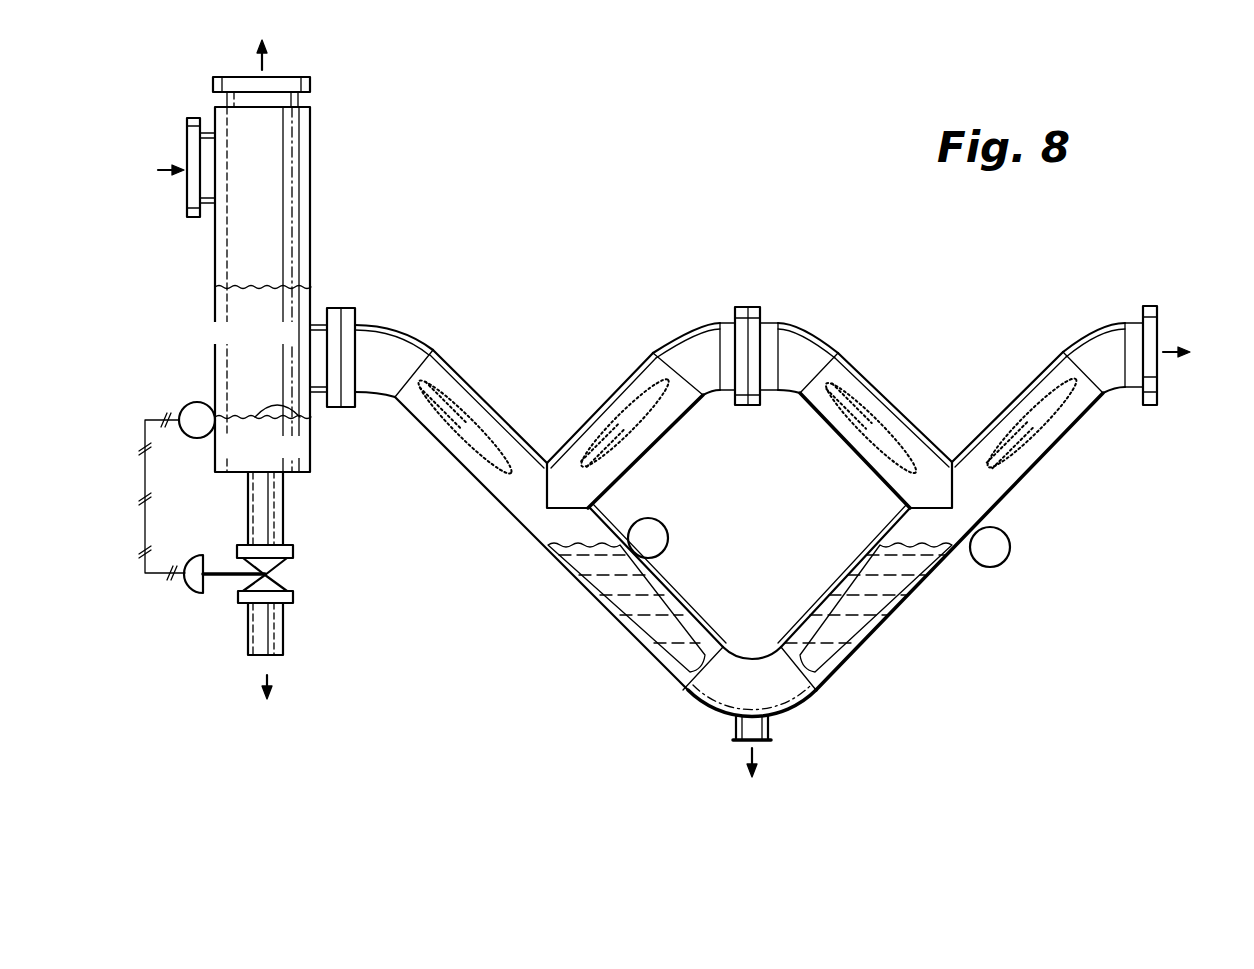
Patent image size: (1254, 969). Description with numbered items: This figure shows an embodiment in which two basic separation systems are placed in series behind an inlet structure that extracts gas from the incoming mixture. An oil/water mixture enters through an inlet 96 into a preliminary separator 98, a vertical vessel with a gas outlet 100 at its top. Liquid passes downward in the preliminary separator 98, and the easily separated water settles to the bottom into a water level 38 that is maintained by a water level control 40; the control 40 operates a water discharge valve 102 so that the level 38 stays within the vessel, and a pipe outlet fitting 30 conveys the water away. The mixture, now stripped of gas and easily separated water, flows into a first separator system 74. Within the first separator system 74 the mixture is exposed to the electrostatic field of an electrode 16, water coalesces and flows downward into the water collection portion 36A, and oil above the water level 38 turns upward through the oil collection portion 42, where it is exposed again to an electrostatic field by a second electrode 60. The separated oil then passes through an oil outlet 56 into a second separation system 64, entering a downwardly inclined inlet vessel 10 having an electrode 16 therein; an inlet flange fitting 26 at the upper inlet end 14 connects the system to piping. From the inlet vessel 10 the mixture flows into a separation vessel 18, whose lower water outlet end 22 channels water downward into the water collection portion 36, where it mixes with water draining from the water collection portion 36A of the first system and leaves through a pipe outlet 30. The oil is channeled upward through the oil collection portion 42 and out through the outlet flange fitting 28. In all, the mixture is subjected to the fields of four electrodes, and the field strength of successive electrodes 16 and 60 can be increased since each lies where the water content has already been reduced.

The inlet vessel 10 is at (478, 478).
The upper inlet end 14 is at (418, 362).
The electrode 16 is at (458, 410).
The separation vessel 18 is at (1000, 507).
The lower water outlet end 22 is at (697, 703).
The inlet flange fitting 26 is at (345, 310).
The outlet flange fitting 28 is at (1150, 308).
The pipe outlet fitting 30 is at (772, 737).
The water collection portion 36 is at (895, 620).
The water collection portion 36A is at (637, 643).
The water level 38 is at (280, 407).
The water level control 40 is at (183, 406).
The oil collection portion 42 is at (613, 393).
The oil outlet 56 is at (740, 320).
The second electrode 60 is at (643, 397).
The second separation system 64 is at (951, 379).
The first separator system 74 is at (537, 389).
The inlet 96 is at (188, 220).
The preliminary separator 98 is at (313, 212).
The gas outlet 100 is at (313, 82).
The water discharge valve 102 is at (263, 582).